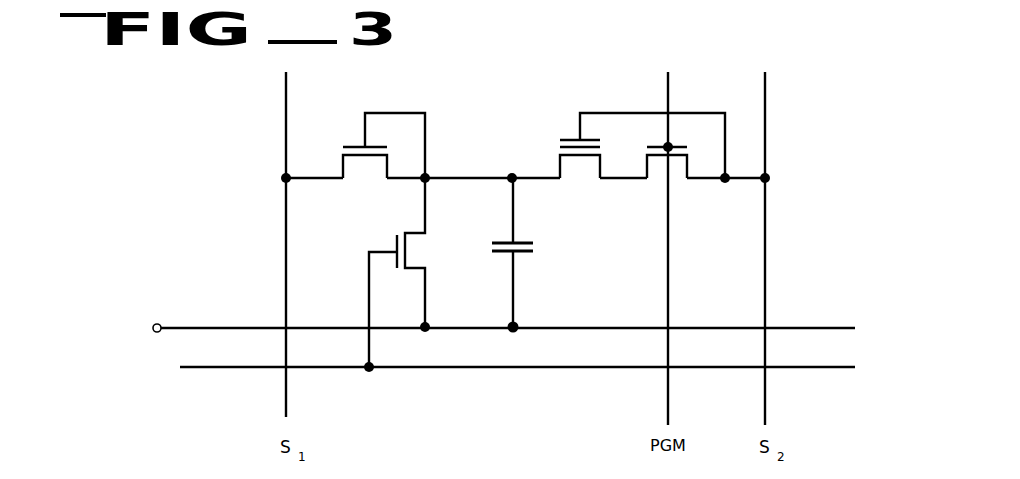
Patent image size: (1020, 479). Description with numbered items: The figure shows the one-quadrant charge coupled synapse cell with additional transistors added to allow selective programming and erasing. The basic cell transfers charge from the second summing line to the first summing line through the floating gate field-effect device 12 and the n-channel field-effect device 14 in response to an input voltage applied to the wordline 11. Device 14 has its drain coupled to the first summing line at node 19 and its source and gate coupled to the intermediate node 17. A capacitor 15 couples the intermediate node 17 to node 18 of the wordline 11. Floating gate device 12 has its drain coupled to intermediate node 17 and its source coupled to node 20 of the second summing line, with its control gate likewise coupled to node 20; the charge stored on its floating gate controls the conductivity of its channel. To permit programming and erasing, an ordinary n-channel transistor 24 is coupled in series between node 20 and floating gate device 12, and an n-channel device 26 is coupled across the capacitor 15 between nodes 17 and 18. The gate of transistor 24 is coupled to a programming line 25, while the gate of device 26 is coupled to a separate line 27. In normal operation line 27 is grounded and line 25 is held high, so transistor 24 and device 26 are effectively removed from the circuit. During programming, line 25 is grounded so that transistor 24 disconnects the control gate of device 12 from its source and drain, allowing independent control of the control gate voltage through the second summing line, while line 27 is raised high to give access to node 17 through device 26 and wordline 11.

The wordline 11 is at (803, 327).
The floating gate field-effect device 12 is at (577, 167).
The n-channel field-effect device 14 is at (365, 166).
The capacitor 15 is at (535, 250).
The intermediate node 17 is at (512, 178).
The node of wordline 18 is at (515, 326).
The node 19 is at (286, 178).
The node of summing line S2 20 is at (766, 178).
The n-channel transistor 24 is at (674, 176).
The programming line 25 is at (665, 106).
The n-channel device 26 is at (421, 252).
The separate line 27 is at (801, 368).